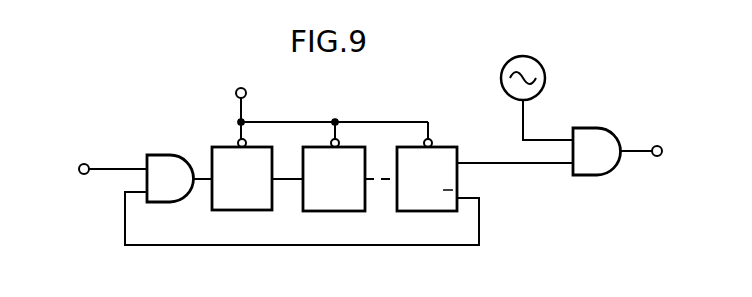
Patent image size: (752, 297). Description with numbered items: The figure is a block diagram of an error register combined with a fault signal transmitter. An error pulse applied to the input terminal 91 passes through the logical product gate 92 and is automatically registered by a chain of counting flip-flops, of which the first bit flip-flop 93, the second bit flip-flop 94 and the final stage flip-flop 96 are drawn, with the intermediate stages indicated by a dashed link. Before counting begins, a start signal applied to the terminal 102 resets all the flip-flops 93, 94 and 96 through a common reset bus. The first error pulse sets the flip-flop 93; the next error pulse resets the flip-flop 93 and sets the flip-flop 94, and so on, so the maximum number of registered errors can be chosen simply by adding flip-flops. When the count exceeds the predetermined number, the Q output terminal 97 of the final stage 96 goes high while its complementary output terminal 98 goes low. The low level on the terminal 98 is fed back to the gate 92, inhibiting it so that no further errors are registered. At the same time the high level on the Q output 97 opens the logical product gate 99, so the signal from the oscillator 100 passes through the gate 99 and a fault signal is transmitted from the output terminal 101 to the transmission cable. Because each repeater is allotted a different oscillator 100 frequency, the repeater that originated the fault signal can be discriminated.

The input terminal 91 is at (83, 163).
The logical product gate 92 is at (163, 154).
The flip-flop 93 is at (247, 211).
The flip-flop 94 is at (345, 212).
The flip-flop 96 is at (433, 212).
The output terminal 97 is at (480, 160).
The output terminal 98 is at (480, 226).
The logical product gate 99 is at (610, 130).
The oscillator 100 is at (546, 72).
The output terminal 101 is at (657, 156).
The terminal 102 is at (247, 96).